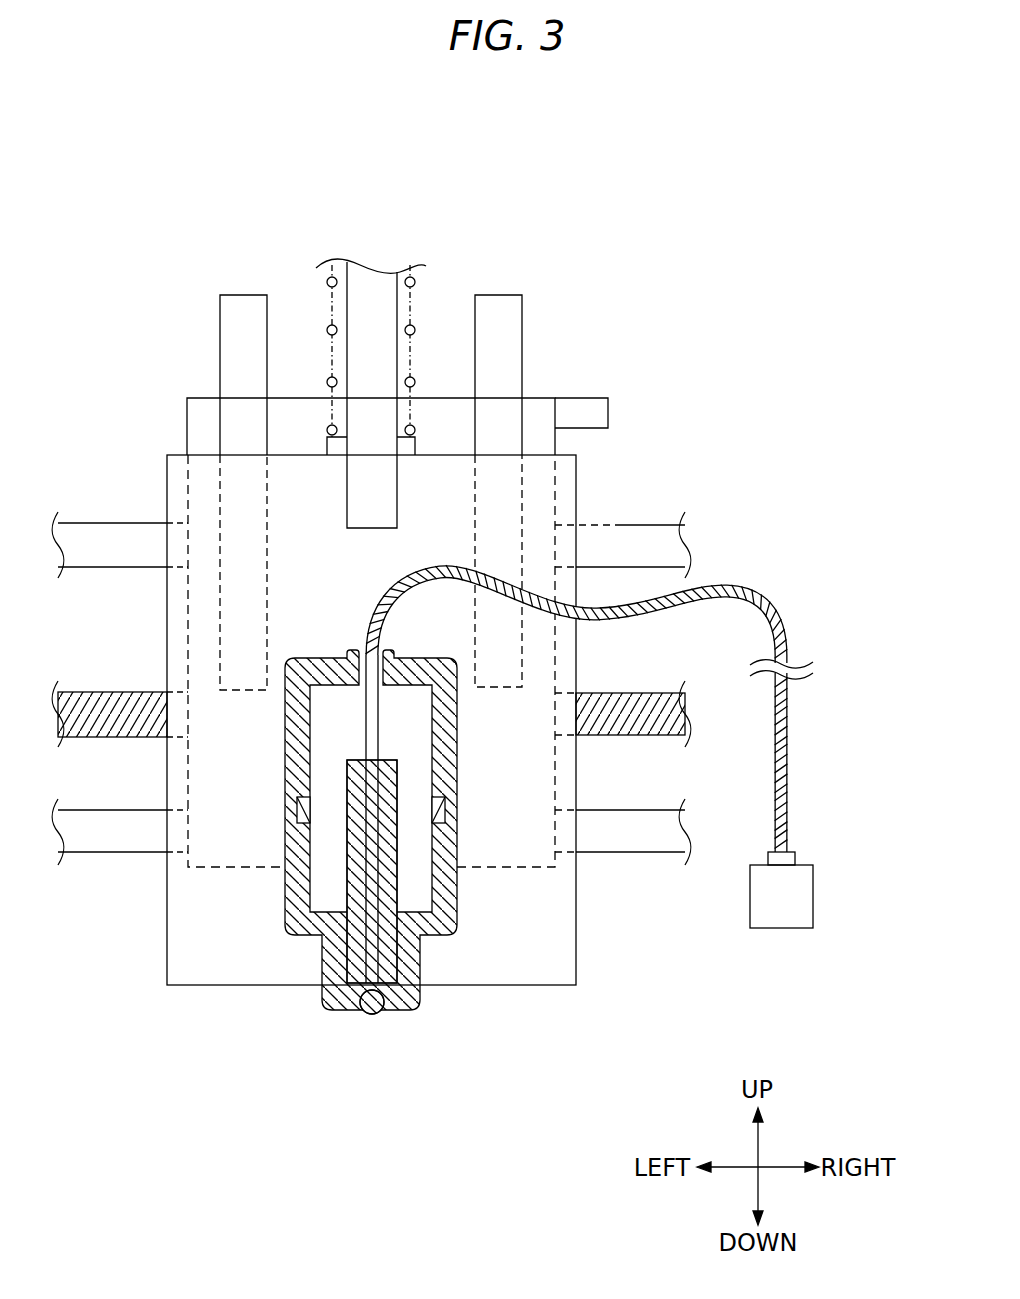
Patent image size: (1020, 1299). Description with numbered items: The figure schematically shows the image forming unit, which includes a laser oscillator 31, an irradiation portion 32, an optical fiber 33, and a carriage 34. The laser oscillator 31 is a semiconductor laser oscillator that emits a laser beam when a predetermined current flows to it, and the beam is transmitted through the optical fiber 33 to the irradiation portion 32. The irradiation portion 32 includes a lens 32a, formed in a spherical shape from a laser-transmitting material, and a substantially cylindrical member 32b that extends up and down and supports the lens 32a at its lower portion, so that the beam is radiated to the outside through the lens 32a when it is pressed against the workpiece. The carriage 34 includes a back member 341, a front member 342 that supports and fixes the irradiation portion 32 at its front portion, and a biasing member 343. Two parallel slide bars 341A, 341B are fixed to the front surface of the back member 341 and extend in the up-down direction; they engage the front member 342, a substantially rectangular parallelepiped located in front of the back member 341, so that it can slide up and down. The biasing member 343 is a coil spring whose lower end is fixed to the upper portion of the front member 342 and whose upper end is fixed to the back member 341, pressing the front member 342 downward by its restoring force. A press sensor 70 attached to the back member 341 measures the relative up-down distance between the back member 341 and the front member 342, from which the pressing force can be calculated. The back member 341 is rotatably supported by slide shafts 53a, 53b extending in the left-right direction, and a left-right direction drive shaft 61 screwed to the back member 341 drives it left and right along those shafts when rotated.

The laser oscillator 31 is at (792, 920).
The irradiation portion 32 is at (349, 929).
The lens 32a is at (372, 1012).
The substantially cylindrical member 32b is at (413, 942).
The optical fiber 33 is at (785, 768).
The carriage 34 is at (205, 235).
The back member 341 is at (205, 422).
The slide bar 341A is at (240, 347).
The slide bar 341B is at (502, 328).
The front member 342 is at (500, 967).
The biasing member 343 is at (415, 288).
The slide shaft 53a is at (628, 542).
The slide shaft 53b is at (627, 842).
The left-right direction drive shaft 61 is at (645, 705).
The press sensor 70 is at (590, 412).